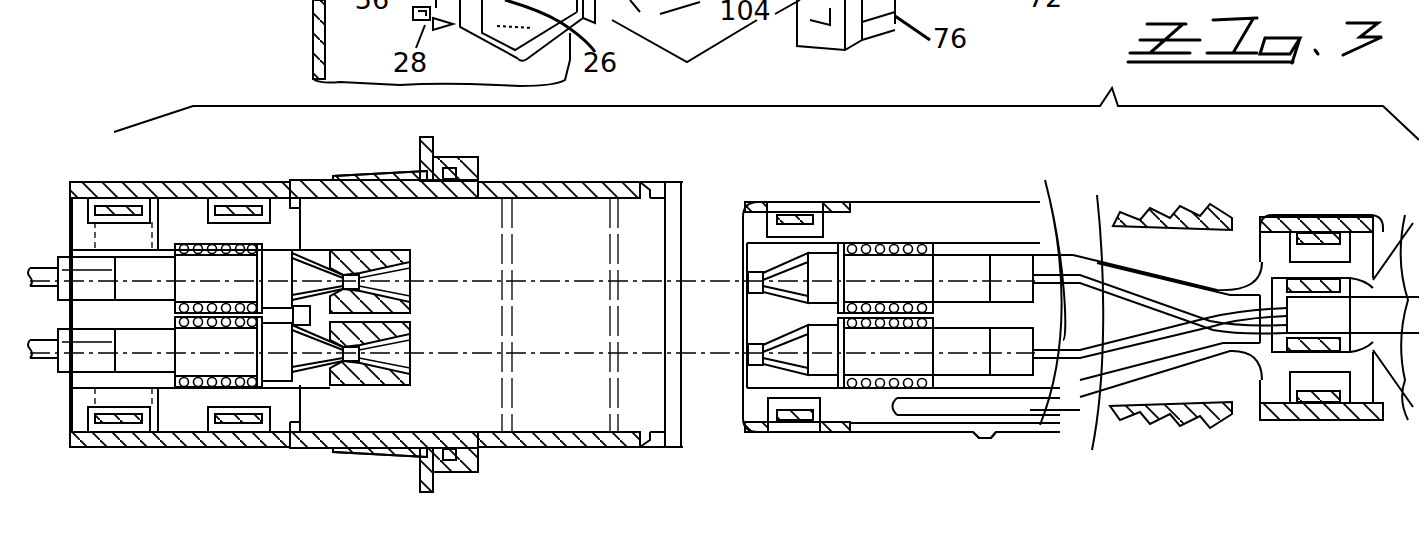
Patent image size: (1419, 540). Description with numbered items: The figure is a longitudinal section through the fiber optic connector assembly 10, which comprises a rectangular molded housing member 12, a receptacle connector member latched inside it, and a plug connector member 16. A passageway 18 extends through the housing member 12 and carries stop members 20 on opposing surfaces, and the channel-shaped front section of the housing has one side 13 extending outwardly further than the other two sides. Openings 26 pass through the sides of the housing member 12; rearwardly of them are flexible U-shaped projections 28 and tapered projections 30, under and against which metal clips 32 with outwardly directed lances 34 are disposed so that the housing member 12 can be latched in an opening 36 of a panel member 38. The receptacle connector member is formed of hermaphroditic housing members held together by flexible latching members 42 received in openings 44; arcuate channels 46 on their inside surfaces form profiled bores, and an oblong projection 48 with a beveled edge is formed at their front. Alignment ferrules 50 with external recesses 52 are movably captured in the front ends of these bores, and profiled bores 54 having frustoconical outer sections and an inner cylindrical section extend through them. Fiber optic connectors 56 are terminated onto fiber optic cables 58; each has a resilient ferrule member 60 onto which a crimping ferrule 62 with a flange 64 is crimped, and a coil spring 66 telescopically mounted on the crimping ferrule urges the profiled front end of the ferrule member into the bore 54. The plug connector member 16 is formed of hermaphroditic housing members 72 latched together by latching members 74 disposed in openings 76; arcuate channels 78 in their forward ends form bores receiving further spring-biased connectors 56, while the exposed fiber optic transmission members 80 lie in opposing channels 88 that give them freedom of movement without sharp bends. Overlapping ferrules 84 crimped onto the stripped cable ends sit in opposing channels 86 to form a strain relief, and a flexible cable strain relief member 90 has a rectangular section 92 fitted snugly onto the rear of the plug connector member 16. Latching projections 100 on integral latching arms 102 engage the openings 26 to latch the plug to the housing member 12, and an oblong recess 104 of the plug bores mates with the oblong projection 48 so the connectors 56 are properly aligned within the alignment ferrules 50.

The fiber optic connector assembly 10 is at (697, 166).
The housing member 12 is at (597, 172).
The side 13 is at (655, 437).
The plug connector member 16 is at (880, 196).
The passageway 18 is at (650, 408).
The stop members 20 is at (300, 198).
The openings 26 is at (541, 198).
The U-shaped projections 28 is at (478, 160).
The projections 30 is at (320, 181).
The metal clips 32 is at (347, 176).
The lances 34 is at (407, 174).
The opening 36 is at (422, 172).
The panel member 38 is at (430, 140).
The latching members 42 is at (108, 423).
The openings 44 is at (130, 407).
The arcuate channels 46 is at (193, 250).
The oblong projection 48 is at (305, 246).
The alignment ferrules 50 is at (397, 257).
The external recesses 52 is at (332, 248).
The profiled bores 54 is at (398, 274).
The fiber optic connectors 56 is at (62, 370).
The fiber optic cables 58 is at (48, 262).
The ferrule members 60 is at (277, 362).
The crimping ferrules 62 is at (133, 343).
The flanges 64 is at (250, 276).
The coil springs 66 is at (195, 245).
The hermaphroditic housing members 72 is at (762, 203).
The latching members 74 is at (808, 214).
The openings 76 is at (780, 233).
The arcuate channels 78 is at (1044, 285).
The fiber optic transmission members 80 is at (1072, 322).
The overlapping ferrules 84 is at (1342, 290).
The channels 86 is at (1280, 287).
The channels 88 is at (1170, 297).
The cable strain relief member 90 is at (1375, 427).
The rectangular section 92 is at (1303, 420).
The latching projections 100 is at (987, 438).
The integral latching arms 102 is at (1172, 218).
The oblong recess 104 is at (750, 298).